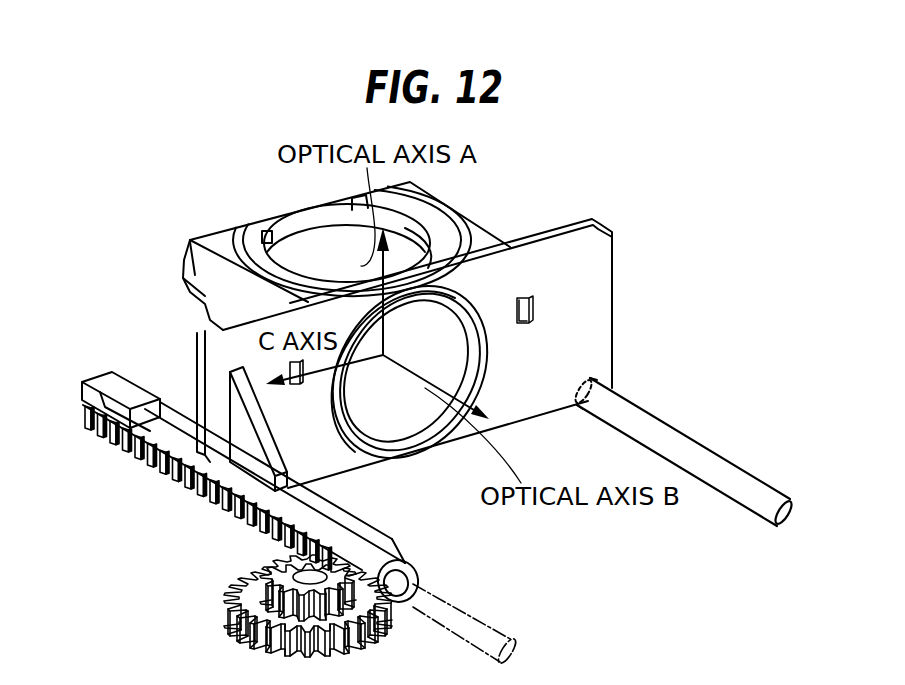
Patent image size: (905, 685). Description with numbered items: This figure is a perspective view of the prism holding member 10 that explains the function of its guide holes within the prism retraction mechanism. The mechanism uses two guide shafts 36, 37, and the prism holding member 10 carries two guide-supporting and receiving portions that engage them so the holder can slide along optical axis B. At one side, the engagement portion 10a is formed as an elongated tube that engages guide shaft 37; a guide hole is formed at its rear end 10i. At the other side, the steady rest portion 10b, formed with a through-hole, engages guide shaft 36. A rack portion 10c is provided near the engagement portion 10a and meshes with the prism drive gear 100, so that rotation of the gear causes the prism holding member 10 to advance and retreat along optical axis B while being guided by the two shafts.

The prism holding member 10 is at (527, 266).
The engagement portion 10a is at (333, 520).
The steady rest portion 10b is at (597, 379).
The rack portion 10c is at (183, 484).
The rear end 10i is at (419, 583).
The guide shaft 36 is at (707, 456).
The guide shaft 37 is at (483, 626).
The prism drive gear 100 is at (252, 581).